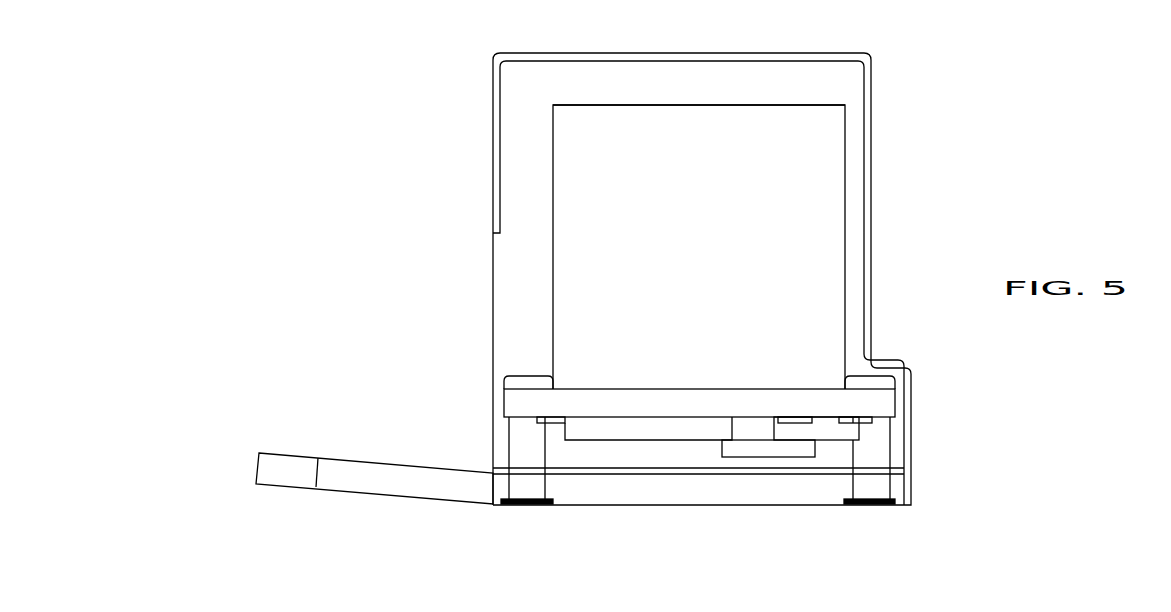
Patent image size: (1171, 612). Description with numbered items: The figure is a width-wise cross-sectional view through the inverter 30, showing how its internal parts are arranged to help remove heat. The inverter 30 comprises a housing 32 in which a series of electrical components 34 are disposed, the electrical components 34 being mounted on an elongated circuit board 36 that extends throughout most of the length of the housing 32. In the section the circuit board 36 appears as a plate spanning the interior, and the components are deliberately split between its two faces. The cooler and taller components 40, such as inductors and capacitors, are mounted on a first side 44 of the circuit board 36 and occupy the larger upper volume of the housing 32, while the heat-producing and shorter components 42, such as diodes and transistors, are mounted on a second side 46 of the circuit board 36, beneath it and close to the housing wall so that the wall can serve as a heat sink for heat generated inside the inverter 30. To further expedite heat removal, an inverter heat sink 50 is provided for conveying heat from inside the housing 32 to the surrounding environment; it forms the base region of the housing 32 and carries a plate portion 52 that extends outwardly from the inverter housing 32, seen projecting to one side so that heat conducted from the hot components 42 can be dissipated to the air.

The inverter 30 is at (470, 79).
The housing 32 is at (872, 73).
The electrical components 34 is at (743, 110).
The cooler and taller components 40 is at (621, 110).
The first side of the circuit board 44 is at (592, 388).
The circuit board 36 is at (808, 395).
The second side of the circuit board 46 is at (557, 422).
The heat-producing and shorter components 42 is at (780, 447).
The inverter heat sink 50 is at (650, 495).
The plate portion 52 is at (351, 483).